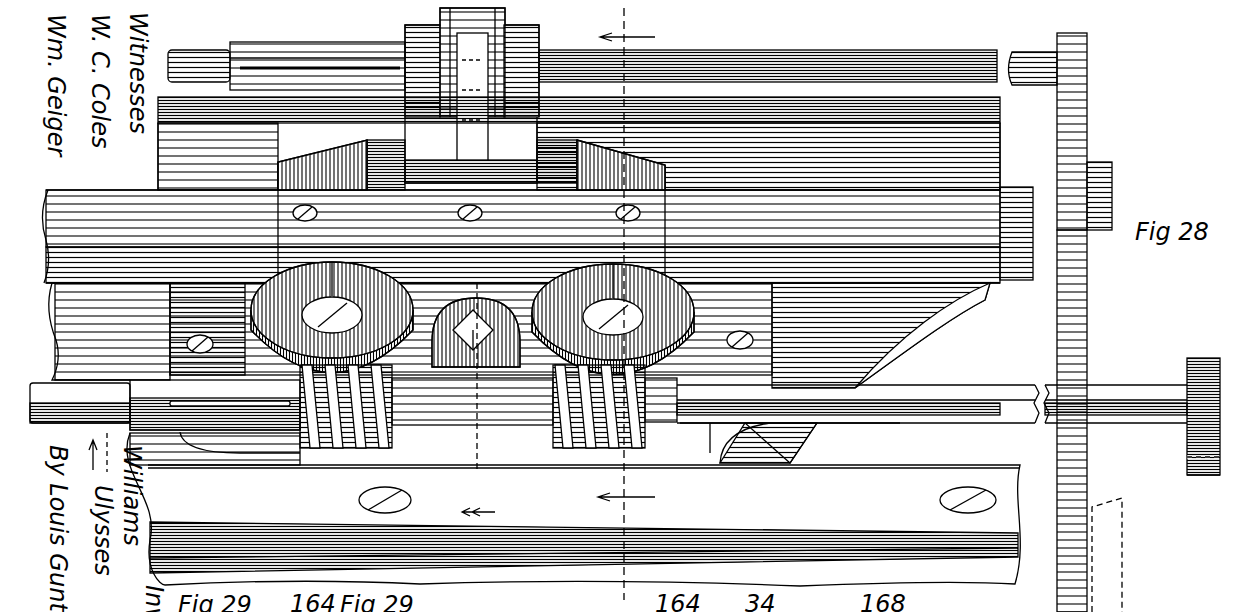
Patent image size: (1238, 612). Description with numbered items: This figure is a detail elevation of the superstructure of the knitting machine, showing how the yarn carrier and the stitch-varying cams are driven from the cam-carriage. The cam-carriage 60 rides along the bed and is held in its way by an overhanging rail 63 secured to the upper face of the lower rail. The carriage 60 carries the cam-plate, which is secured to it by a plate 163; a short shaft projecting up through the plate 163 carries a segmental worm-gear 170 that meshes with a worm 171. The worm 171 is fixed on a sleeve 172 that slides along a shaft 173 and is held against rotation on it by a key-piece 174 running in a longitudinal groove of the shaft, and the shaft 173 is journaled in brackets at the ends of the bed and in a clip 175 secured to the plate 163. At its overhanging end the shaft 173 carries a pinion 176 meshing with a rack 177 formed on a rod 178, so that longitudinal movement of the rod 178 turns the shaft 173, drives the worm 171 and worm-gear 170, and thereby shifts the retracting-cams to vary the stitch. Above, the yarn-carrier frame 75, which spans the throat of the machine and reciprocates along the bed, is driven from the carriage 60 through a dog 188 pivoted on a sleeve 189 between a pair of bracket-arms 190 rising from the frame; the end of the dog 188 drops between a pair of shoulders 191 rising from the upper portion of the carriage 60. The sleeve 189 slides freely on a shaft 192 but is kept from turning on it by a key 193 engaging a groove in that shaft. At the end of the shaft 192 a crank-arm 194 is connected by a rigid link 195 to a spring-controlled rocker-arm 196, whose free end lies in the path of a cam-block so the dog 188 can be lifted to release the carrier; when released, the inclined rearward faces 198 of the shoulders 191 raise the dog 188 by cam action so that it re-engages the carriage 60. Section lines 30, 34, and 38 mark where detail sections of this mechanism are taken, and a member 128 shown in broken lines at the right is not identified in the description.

The shaft 192 is at (194, 56).
The key 193 is at (258, 64).
The sleeve 189 is at (338, 52).
The bracket-arms 190 is at (528, 58).
The dog 188 is at (472, 130).
The shoulders 191 is at (474, 150).
The yarn-carrier frame 75 is at (579, 109).
The inclines 198 is at (305, 168).
The section line 34 is at (628, 304).
The section line 38 is at (476, 386).
The segmental worm-gear 170 is at (472, 318).
The plate 163 is at (471, 329).
The cam-carriage 60 is at (910, 315).
The sleeve 172 is at (666, 400).
The key-piece 174 is at (256, 408).
The worm 171 is at (306, 442).
The clip 175 is at (472, 401).
The shaft 173 is at (1062, 392).
The pinion 176 is at (1198, 358).
The rack 177 is at (1187, 448).
The rod 178 is at (1212, 478).
The crank-arm 194 is at (1082, 115).
The rigid link 195 is at (1106, 185).
The rocker-arm 196 is at (1082, 282).
The member 128 is at (1122, 580).
The rail 63 is at (573, 509).
The section line 30 is at (250, 479).